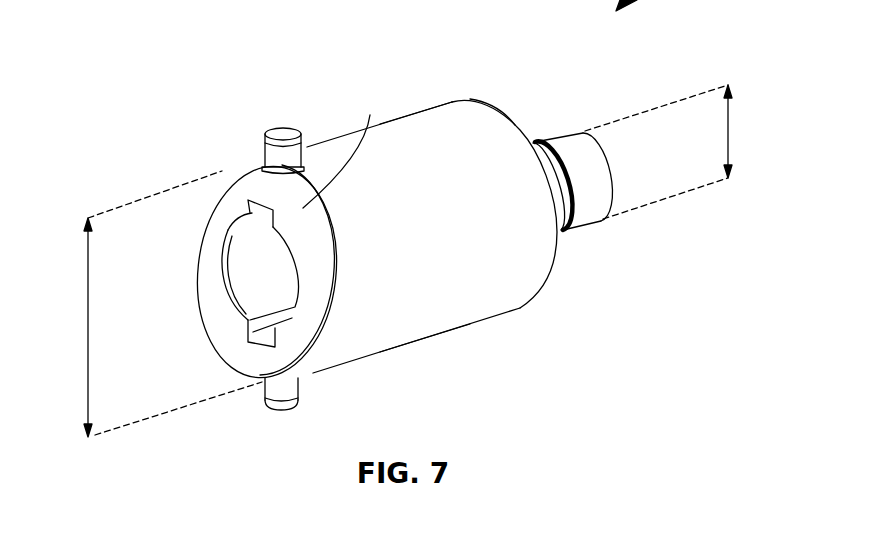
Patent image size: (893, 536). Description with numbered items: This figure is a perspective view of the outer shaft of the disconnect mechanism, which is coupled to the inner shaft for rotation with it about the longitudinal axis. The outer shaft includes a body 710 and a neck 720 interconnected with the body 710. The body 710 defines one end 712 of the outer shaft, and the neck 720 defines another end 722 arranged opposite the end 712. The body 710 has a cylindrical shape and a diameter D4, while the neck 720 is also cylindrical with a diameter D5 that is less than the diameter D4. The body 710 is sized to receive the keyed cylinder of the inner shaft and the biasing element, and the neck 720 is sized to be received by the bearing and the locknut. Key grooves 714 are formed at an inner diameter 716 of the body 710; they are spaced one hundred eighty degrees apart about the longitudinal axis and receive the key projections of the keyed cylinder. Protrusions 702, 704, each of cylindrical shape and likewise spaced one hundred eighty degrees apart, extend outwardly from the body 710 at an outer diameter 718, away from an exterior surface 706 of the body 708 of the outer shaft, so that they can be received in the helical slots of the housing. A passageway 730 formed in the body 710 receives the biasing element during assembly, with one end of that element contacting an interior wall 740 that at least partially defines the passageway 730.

The protrusion 702 is at (292, 158).
The protrusion 704 is at (278, 397).
The exterior surface 706 is at (403, 238).
The body 708 is at (437, 120).
The body 710 is at (420, 322).
The end 712 is at (210, 308).
The key groove 714 is at (233, 172).
The inner diameter 716 is at (240, 240).
The outer diameter 718 is at (349, 146).
The neck 720 is at (579, 212).
The end 722 is at (607, 168).
The passageway 730 is at (235, 268).
The interior wall 740 is at (483, 122).
The diameter of the body D4 is at (87, 327).
The diameter of the neck D5 is at (733, 130).